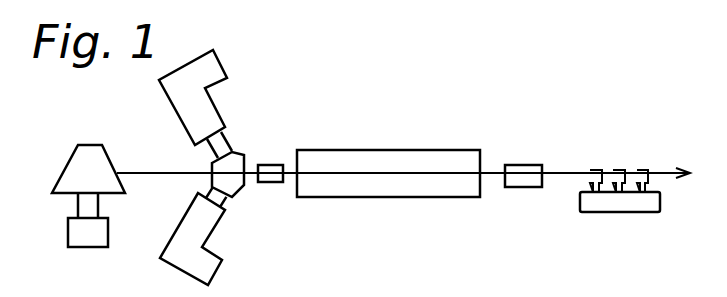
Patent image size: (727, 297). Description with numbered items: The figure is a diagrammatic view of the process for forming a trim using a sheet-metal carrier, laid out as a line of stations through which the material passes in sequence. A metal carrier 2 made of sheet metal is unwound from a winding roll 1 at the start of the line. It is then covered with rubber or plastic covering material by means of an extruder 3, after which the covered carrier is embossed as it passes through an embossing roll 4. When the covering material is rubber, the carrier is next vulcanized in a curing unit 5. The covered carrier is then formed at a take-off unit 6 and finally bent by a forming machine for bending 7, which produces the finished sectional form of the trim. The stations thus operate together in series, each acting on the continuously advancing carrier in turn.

The winding roll 1 is at (88, 146).
The metal carrier 2 is at (146, 172).
The extruder 3 is at (221, 65).
The embossing roll 4 is at (272, 165).
The curing unit 5 is at (376, 150).
The take-off unit 6 is at (528, 165).
The forming machine for bending 7 is at (596, 170).